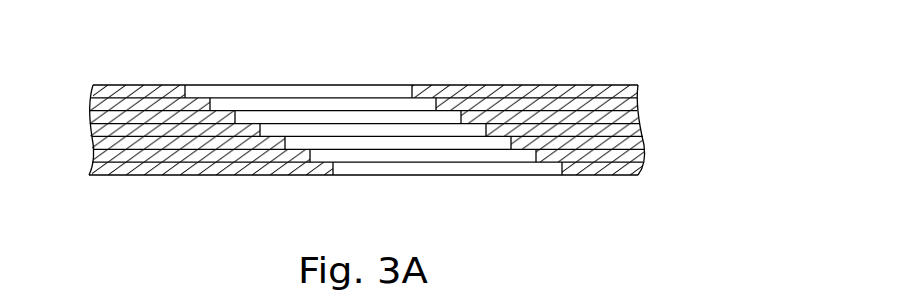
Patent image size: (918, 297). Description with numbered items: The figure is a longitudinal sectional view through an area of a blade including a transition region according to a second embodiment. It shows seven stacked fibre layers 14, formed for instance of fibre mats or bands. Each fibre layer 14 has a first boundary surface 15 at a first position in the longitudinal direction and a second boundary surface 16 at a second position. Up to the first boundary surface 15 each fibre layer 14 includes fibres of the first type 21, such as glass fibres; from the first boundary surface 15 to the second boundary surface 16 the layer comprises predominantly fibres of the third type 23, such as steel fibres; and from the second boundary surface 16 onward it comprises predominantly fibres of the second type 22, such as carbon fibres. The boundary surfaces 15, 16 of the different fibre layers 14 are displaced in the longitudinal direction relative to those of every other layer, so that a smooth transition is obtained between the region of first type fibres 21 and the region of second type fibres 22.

The fibre layer 14 is at (405, 94).
The first boundary surface 15 is at (193, 97).
The second boundary surface 16 is at (412, 88).
The first type of fibres 21 is at (138, 97).
The second type of fibres 22 is at (557, 113).
The third type of fibres 23 is at (328, 112).